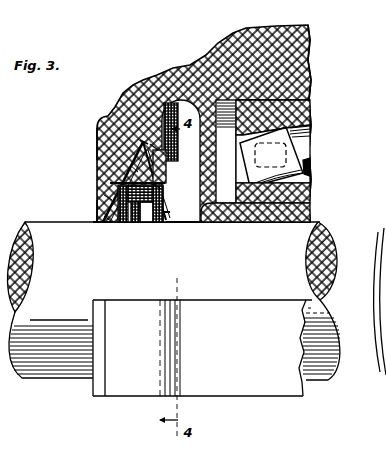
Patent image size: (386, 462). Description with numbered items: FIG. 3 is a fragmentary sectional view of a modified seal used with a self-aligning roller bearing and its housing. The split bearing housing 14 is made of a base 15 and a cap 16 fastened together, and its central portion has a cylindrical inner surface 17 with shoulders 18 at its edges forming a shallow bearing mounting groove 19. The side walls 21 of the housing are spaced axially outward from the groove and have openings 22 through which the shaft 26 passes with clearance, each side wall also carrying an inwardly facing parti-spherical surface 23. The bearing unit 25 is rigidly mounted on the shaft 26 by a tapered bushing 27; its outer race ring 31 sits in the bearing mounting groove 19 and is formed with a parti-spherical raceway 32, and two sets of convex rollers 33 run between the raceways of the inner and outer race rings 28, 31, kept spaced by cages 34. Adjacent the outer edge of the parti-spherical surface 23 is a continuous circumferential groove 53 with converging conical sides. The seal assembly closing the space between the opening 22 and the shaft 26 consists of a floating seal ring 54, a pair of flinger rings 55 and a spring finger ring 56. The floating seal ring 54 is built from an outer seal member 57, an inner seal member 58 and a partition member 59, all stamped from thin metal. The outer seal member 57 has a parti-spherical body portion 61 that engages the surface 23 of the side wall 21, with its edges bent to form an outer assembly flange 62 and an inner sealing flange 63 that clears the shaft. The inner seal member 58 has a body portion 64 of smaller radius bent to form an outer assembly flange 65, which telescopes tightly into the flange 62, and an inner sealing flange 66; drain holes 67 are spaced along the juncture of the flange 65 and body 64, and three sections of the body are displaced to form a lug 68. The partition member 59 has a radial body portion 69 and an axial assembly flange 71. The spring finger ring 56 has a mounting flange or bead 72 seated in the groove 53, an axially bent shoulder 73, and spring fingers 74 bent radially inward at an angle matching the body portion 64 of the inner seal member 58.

The split bearing housing 14 is at (283, 398).
The base 15 is at (237, 397).
The cap 16 is at (311, 34).
The cylindrical inner surface 17 is at (311, 80).
The shoulders 18 is at (226, 100).
The bearing mounting groove 19 is at (270, 100).
The side walls 21 is at (97, 140).
The openings 22 is at (94, 216).
The parti-spherical surface 23 is at (135, 170).
The bearing unit 25 is at (318, 112).
The shaft 26 is at (330, 372).
The tapered bushing 27 is at (311, 219).
The inner race ring 28 is at (311, 196).
The outer race ring 31 is at (311, 97).
The parti-spherical raceway 32 is at (311, 138).
The convex rollers 33 is at (306, 165).
The cages 34 is at (288, 160).
The circumferentially extending groove 53 is at (150, 165).
The floating seal ring 54 is at (92, 219).
The flinger rings 55 is at (122, 224).
The spring finger ring 56 is at (194, 224).
The outer seal member 57 is at (104, 223).
The inner seal member 58 is at (170, 224).
The partition member 59 is at (129, 227).
The parti-spherical body portion 61 is at (110, 203).
The outer assembly flange 62 is at (140, 186).
The inner sealing flange 63 is at (104, 224).
The body portion 64 is at (157, 227).
The outer assembly flange 65 is at (160, 170).
The inner sealing flange 66 is at (176, 224).
The drain holes 67 is at (162, 187).
The lug 68 is at (170, 210).
The body portion 69 is at (107, 197).
The assembly flange 71 is at (164, 152).
The mounting flange or bead 72 is at (156, 148).
The shoulder 73 is at (172, 140).
The spring fingers 74 is at (185, 223).